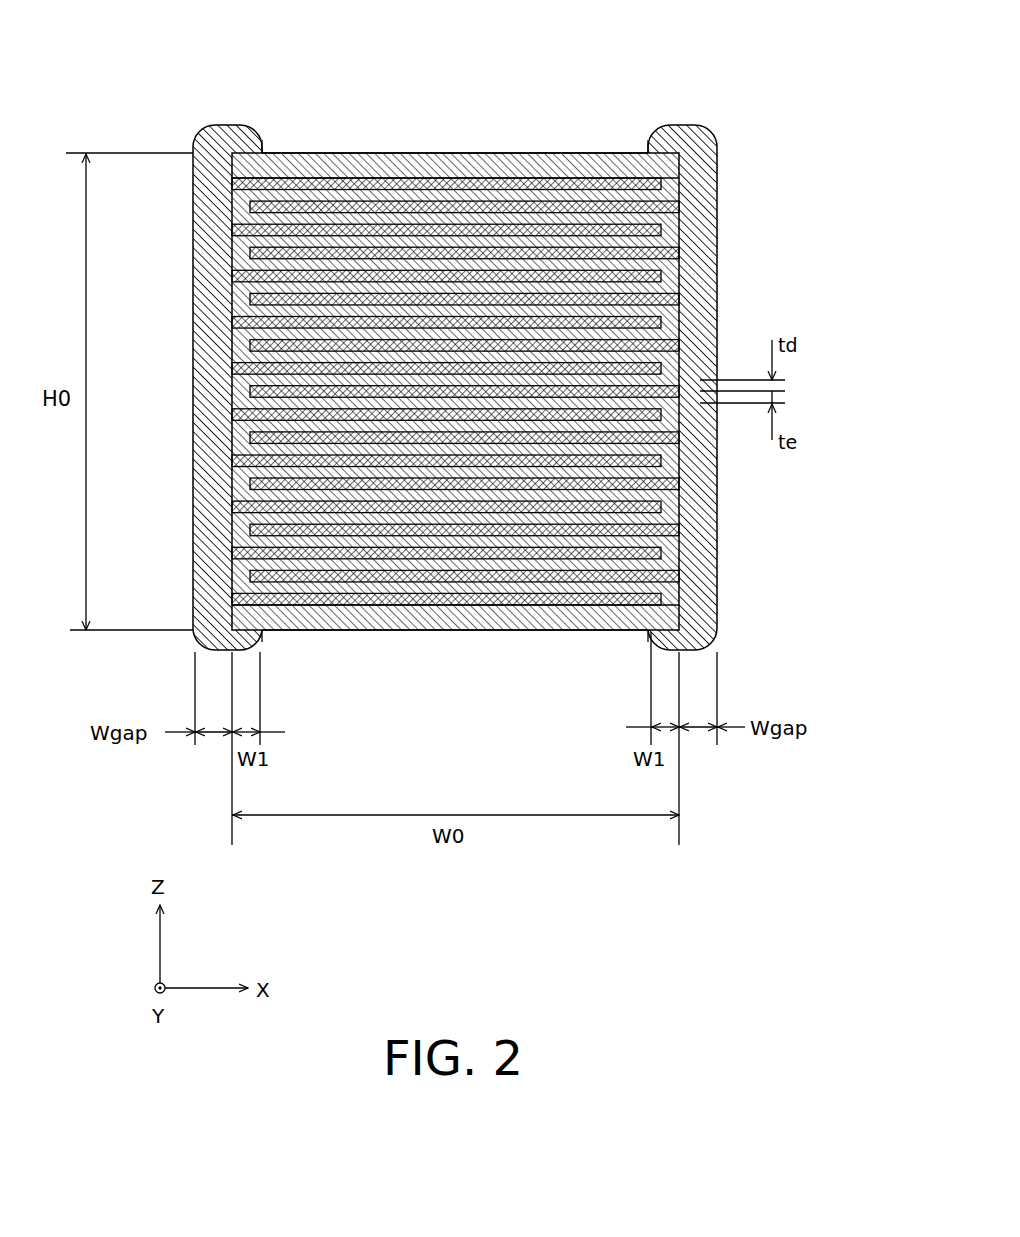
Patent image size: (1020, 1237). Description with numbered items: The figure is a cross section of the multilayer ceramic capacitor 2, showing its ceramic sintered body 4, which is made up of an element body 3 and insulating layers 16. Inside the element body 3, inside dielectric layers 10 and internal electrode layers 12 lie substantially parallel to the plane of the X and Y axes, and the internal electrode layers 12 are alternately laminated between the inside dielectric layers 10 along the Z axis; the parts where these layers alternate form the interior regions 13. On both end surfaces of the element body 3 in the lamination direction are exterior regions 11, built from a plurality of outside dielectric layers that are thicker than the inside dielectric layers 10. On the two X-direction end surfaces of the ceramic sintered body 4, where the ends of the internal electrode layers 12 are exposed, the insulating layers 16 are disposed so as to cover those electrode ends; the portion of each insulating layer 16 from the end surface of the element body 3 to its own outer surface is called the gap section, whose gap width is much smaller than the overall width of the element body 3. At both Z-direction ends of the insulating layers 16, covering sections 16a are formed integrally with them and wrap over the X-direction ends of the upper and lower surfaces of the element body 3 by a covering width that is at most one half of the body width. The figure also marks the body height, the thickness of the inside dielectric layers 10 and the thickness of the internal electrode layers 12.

The multilayer ceramic capacitor 2 is at (460, 367).
The element body 3 is at (528, 632).
The ceramic sintered body 4 is at (548, 122).
The inside dielectric layers 10 is at (460, 371).
The exterior regions 11 is at (440, 152).
The internal electrode layers 12 is at (713, 152).
The interior regions 13 is at (168, 176).
The insulating layers 16 is at (495, 371).
The covering sections 16a is at (241, 134).